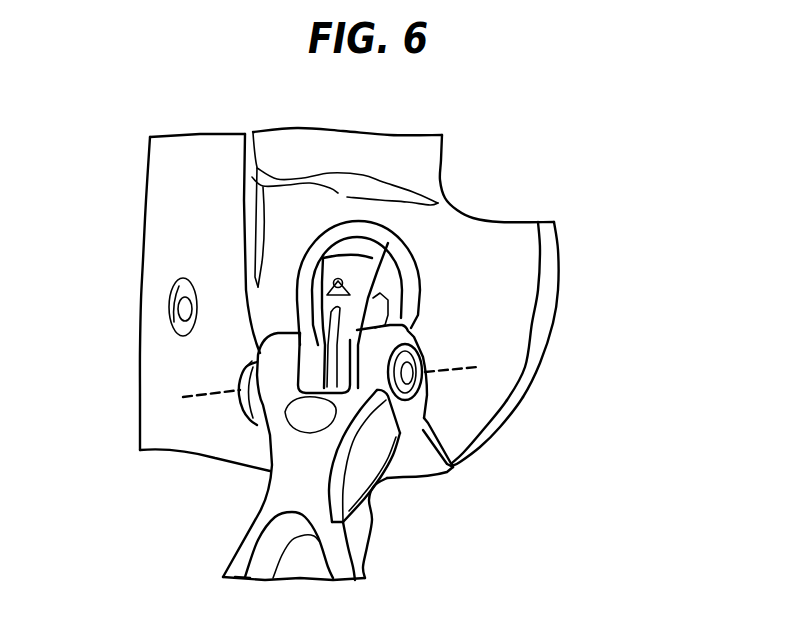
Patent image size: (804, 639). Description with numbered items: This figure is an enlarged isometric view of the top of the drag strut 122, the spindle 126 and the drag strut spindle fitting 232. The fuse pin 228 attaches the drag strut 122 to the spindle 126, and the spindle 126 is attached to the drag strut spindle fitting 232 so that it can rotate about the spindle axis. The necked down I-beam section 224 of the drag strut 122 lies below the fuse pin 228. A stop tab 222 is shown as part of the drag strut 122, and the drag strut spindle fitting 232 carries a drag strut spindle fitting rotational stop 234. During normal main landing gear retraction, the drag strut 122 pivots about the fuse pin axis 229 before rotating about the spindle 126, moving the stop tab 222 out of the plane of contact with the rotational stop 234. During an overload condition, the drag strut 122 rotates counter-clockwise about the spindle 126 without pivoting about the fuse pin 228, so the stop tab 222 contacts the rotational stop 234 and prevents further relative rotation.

The drag strut 122 is at (176, 549).
The spindle 126 is at (358, 265).
The stop tab 222 is at (447, 473).
The necked down I-beam section 224 is at (345, 488).
The fuse pin 228 is at (408, 377).
The fuse pin axis 229 is at (200, 391).
The drag strut spindle fitting 232 is at (592, 297).
The drag strut spindle fitting rotational stop 234 is at (500, 427).